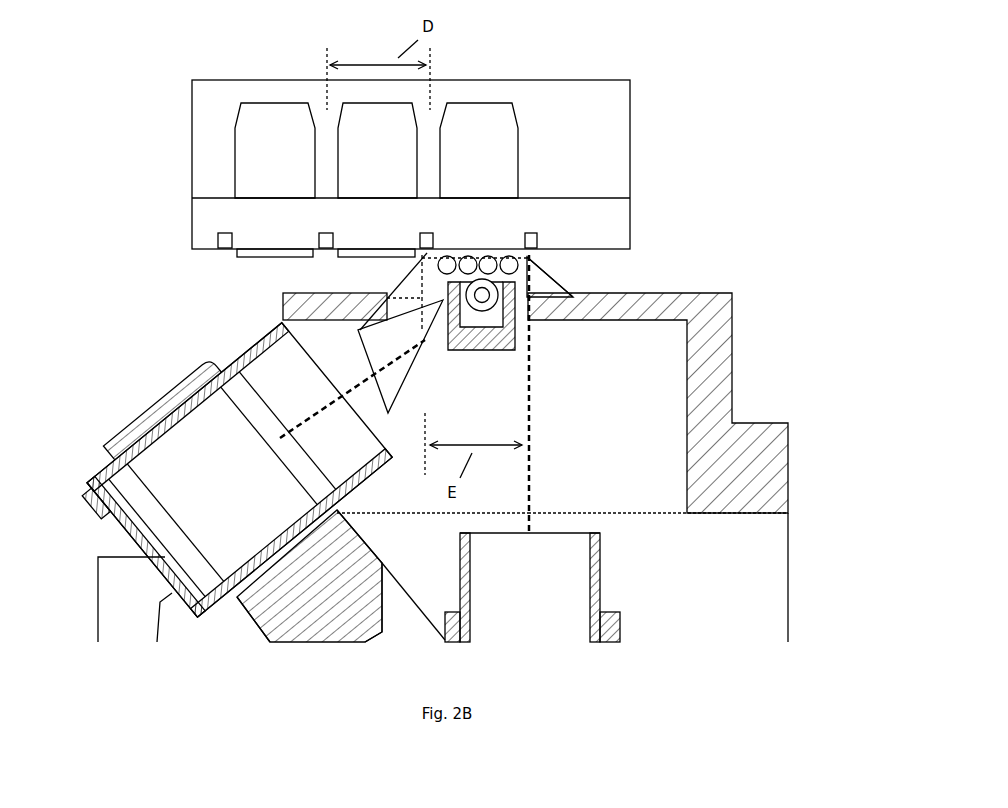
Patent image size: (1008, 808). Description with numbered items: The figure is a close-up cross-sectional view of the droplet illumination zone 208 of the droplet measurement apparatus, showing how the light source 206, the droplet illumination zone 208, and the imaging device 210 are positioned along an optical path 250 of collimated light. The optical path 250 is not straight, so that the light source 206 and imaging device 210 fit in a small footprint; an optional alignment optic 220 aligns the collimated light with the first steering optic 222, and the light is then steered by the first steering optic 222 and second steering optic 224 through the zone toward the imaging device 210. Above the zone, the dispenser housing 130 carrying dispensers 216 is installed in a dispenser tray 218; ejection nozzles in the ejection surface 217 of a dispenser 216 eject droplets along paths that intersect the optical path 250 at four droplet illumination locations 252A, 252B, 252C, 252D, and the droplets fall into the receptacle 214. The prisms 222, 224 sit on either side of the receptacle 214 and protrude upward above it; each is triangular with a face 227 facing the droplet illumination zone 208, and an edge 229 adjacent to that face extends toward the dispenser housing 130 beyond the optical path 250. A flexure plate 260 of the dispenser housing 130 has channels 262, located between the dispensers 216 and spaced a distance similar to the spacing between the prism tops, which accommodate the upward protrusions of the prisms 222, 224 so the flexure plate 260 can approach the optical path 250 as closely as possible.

The dispenser housing 130 is at (632, 160).
The dispenser 216 is at (518, 140).
The dispenser tray 218 is at (190, 232).
The flexure plate 260 is at (223, 253).
The channel 262 is at (323, 253).
The droplet illumination zone 208 is at (628, 276).
The ejection surface 217 is at (512, 255).
The droplet illumination location 252A is at (440, 257).
The droplet illumination location 252B is at (468, 256).
The droplet illumination location 252C is at (488, 256).
The droplet illumination location 252D is at (510, 256).
The second steering optic 224 is at (548, 277).
The edge 229 is at (530, 257).
The first steering optic 222 is at (401, 283).
The receptacle 214 is at (515, 347).
The face 227 is at (527, 277).
The optical path 250 is at (531, 400).
The alignment optic 220 is at (398, 383).
The light source 206 is at (105, 473).
The imaging device 210 is at (600, 562).